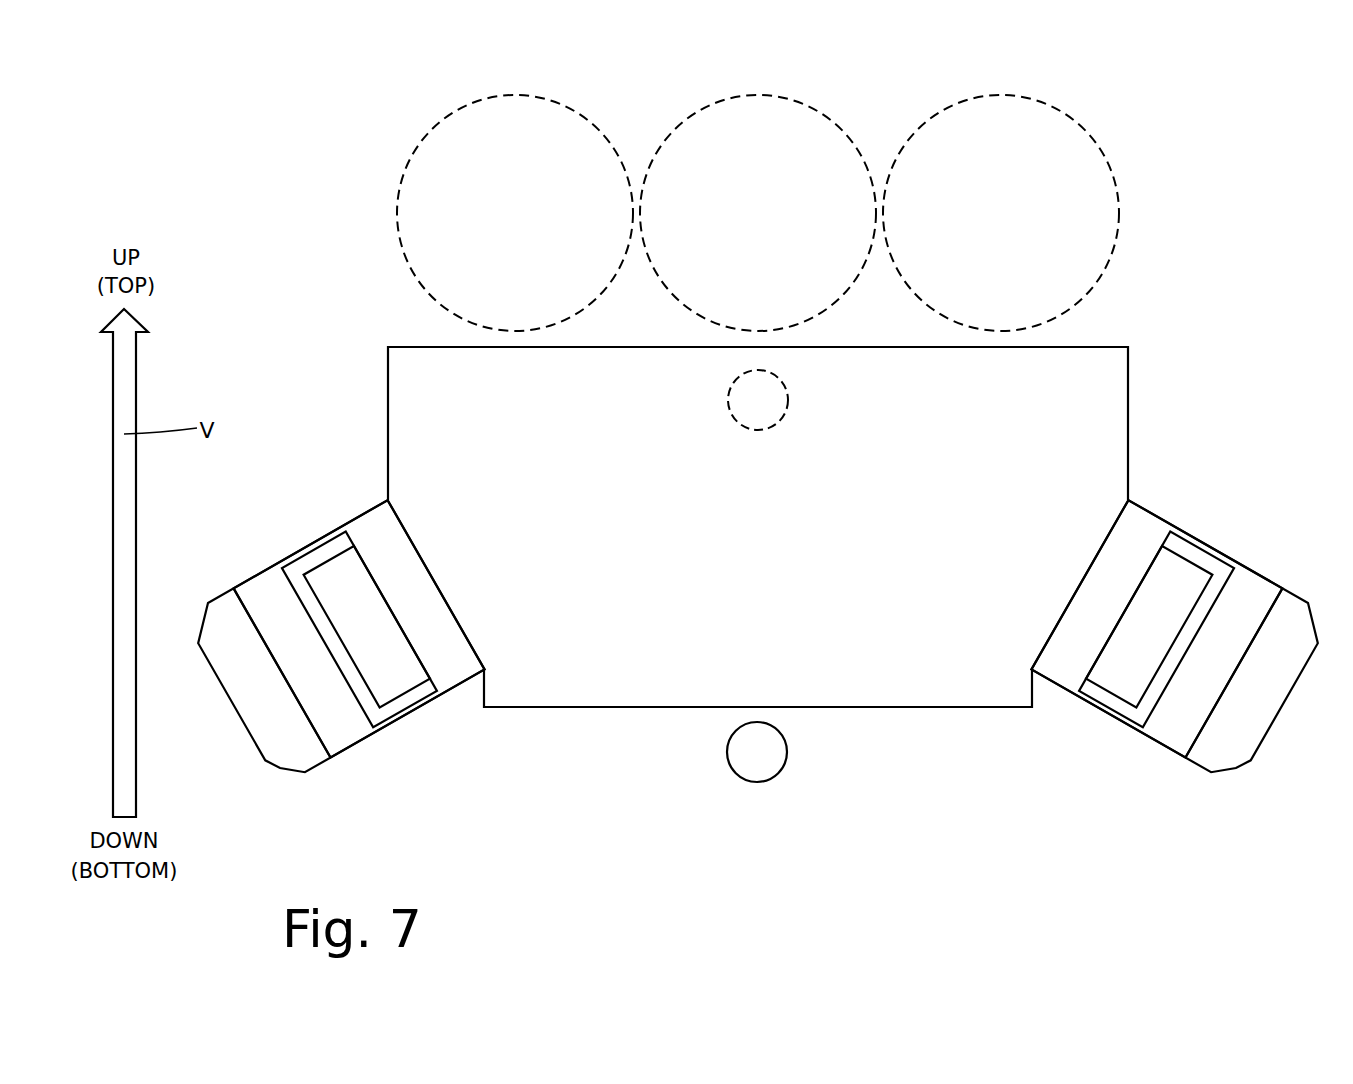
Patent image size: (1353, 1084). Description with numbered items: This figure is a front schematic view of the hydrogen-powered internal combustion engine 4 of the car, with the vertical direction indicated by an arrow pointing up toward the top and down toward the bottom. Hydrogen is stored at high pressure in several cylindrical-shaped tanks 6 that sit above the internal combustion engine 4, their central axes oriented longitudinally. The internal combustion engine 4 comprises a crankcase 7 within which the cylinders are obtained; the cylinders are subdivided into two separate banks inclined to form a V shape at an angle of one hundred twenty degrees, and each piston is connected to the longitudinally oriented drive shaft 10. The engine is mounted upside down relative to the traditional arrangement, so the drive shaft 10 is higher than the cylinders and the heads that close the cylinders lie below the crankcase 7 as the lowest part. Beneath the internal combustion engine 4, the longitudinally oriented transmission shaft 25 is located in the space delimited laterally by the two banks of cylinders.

The internal combustion engine 4 is at (756, 445).
The tanks 6 is at (463, 142).
The crankcase 7 is at (567, 663).
The drive shaft 10 is at (757, 398).
The transmission shaft 25 is at (747, 754).